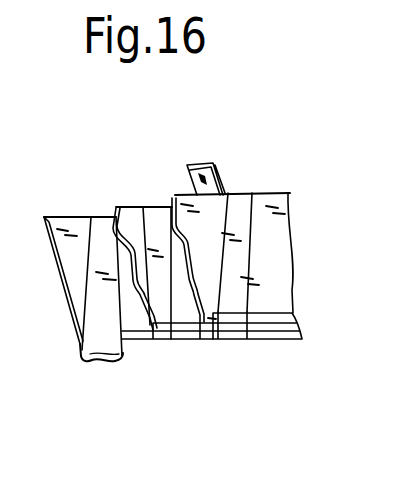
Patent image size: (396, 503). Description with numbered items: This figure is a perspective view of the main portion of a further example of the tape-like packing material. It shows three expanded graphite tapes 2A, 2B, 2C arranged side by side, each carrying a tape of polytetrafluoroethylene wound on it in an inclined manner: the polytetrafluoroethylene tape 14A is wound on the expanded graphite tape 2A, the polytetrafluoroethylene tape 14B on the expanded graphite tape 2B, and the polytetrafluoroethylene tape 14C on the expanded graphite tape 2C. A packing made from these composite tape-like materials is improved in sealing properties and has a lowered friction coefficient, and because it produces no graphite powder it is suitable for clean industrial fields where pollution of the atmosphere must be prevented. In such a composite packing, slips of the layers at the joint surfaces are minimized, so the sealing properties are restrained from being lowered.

The expanded graphite tape 2A is at (68, 222).
The expanded graphite tape 2B is at (130, 213).
The expanded graphite tape 2C is at (208, 207).
The tape of polytetrafluoroethylene 14A is at (100, 347).
The tape of polytetrafluoroethylene 14B is at (154, 325).
The tape of polytetrafluoroethylene 14C is at (233, 303).